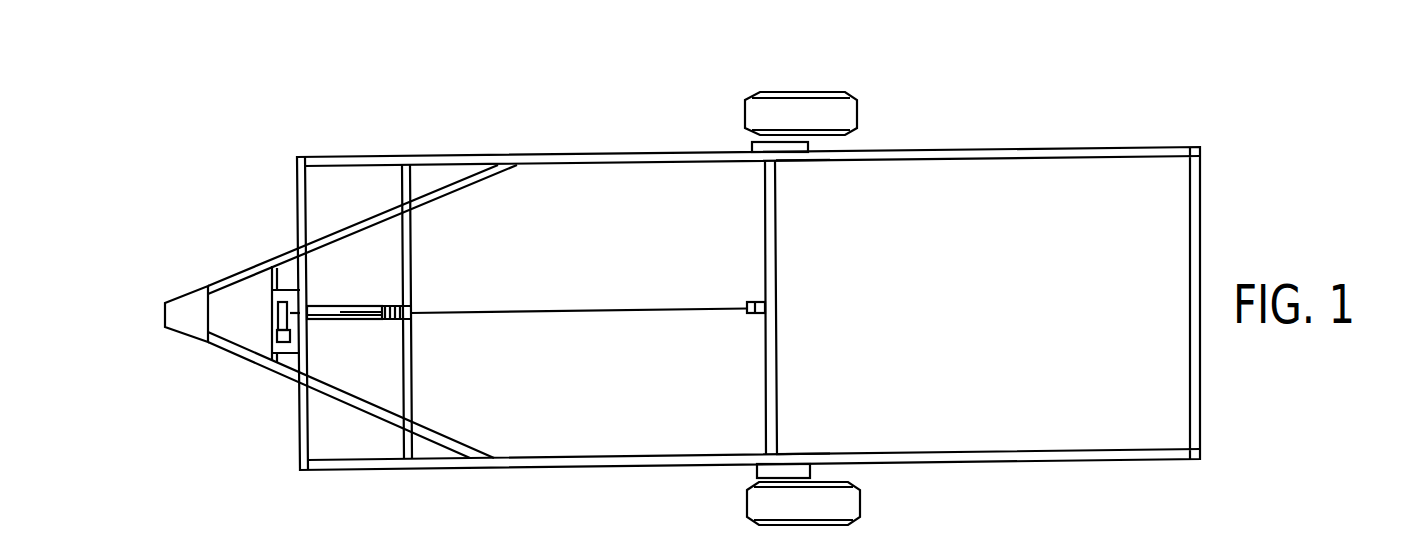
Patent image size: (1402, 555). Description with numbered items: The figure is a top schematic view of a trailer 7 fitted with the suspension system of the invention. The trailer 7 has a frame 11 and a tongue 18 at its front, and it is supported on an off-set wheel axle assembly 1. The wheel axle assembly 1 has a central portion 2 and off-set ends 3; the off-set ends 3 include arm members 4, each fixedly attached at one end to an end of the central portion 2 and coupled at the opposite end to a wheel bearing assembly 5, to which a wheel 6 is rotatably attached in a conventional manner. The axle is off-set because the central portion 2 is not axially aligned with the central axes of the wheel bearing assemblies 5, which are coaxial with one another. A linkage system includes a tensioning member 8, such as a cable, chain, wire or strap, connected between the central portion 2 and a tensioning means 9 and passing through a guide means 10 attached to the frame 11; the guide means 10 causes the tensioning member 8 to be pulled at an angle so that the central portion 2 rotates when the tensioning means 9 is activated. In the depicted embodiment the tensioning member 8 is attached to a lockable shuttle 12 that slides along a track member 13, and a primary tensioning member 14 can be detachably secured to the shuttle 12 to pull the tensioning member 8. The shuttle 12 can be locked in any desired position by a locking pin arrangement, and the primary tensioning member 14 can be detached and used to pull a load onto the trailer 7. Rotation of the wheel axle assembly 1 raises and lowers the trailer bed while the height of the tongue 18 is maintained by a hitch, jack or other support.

The wheel axle assembly 1 is at (937, 106).
The central portion 2 is at (777, 260).
The off-set ends 3 is at (809, 170).
The arm member 4 is at (750, 148).
The wheel bearing assembly 5 is at (810, 147).
The wheel 6 is at (857, 96).
The trailer 7 is at (361, 479).
The tensioning member 8 is at (565, 313).
The tensioning means 9 is at (272, 346).
The guide means 10 is at (415, 309).
The frame 11 is at (412, 240).
The lockable shuttle 12 is at (392, 305).
The track member 13 is at (337, 305).
The primary tensioning member 14 is at (340, 320).
The tongue 18 is at (192, 298).